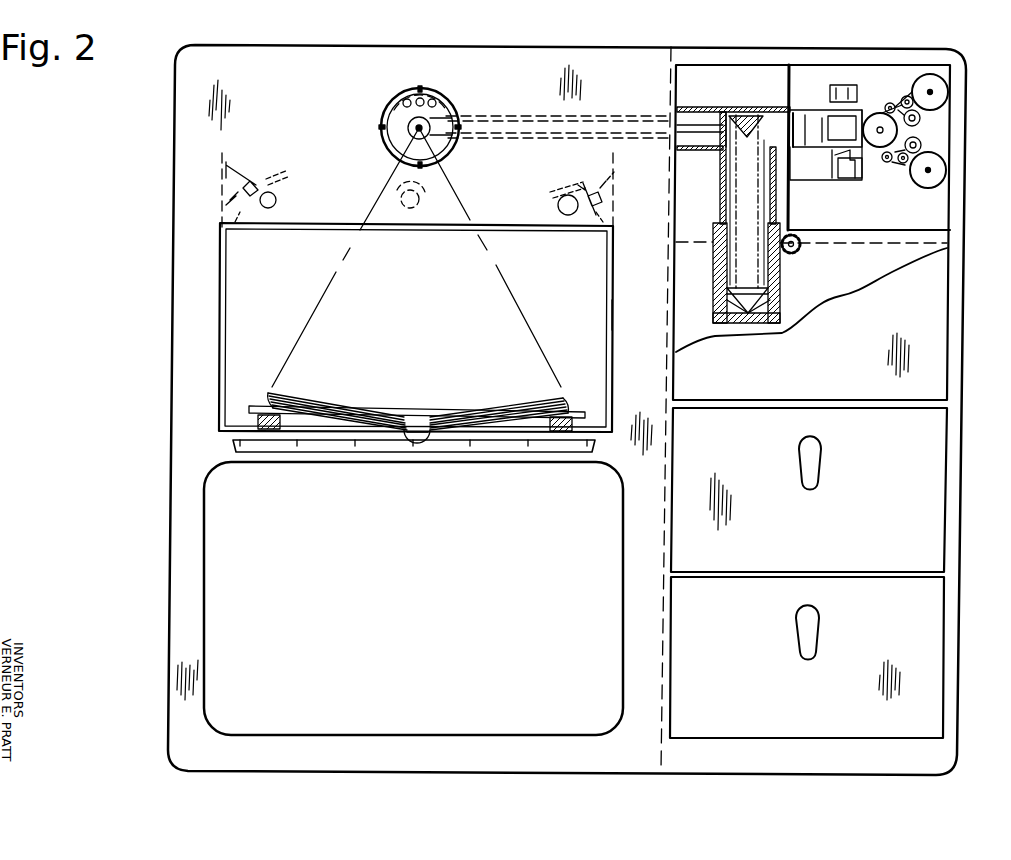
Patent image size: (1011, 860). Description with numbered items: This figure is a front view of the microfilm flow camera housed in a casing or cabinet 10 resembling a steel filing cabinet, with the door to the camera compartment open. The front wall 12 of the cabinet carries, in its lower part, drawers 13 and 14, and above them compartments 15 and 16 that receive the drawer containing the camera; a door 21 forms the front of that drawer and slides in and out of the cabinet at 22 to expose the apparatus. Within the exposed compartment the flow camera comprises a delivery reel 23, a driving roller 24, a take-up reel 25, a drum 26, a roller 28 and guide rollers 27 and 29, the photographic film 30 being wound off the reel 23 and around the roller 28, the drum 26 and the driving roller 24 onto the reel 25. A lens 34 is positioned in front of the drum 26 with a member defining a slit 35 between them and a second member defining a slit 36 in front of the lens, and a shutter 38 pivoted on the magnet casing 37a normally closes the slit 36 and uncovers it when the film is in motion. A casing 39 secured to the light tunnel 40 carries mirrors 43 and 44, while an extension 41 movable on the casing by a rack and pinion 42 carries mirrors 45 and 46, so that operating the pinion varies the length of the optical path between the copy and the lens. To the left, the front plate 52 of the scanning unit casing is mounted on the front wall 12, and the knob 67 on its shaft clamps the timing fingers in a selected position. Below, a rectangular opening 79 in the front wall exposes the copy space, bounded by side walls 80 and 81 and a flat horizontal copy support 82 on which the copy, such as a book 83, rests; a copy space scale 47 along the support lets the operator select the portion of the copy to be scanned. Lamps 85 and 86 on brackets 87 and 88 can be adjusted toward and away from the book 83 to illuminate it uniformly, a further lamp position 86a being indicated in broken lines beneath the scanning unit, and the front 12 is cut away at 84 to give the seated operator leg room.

The casing or cabinet 10 is at (567, 401).
The front wall 12 is at (268, 92).
The drawer 13 is at (872, 656).
The drawer 14 is at (866, 481).
The compartment 15 is at (702, 214).
The compartment 16 is at (940, 218).
The door 21 is at (886, 329).
The slide location 22 is at (948, 404).
The delivery reel 23 is at (950, 92).
The driving roller 24 is at (923, 144).
The take-up reel 25 is at (948, 170).
The drum 26 is at (884, 113).
The guide roller 27 is at (912, 97).
The roller 28 is at (921, 118).
The guide roller 29 is at (904, 165).
The photographic film 30 is at (881, 143).
The lens 34 is at (812, 122).
The slit 35 is at (839, 129).
The slit 36 is at (797, 110).
The casing 37a is at (846, 178).
The shutter 38 is at (828, 150).
The casing 39 is at (720, 176).
The light tunnel 40 is at (687, 107).
The extension 41 is at (713, 280).
The rack and pinion 42 is at (800, 247).
The mirror 43 is at (737, 113).
The mirror 44 is at (752, 118).
The mirror 45 is at (737, 325).
The mirror 46 is at (766, 325).
The copy space scale 47 is at (235, 441).
The front plate 52 is at (392, 110).
The knob 67 is at (413, 133).
The rectangular opening 79 is at (416, 328).
The side wall 80 is at (228, 320).
The side wall 81 is at (612, 312).
The copy support 82 is at (600, 430).
The book or tome 83 is at (378, 404).
The cut-away 84 is at (420, 612).
The lamp 85 is at (557, 207).
The lamp 86 is at (278, 201).
The roller 86a is at (430, 190).
The bracket 87 is at (586, 182).
The bracket 88 is at (256, 170).